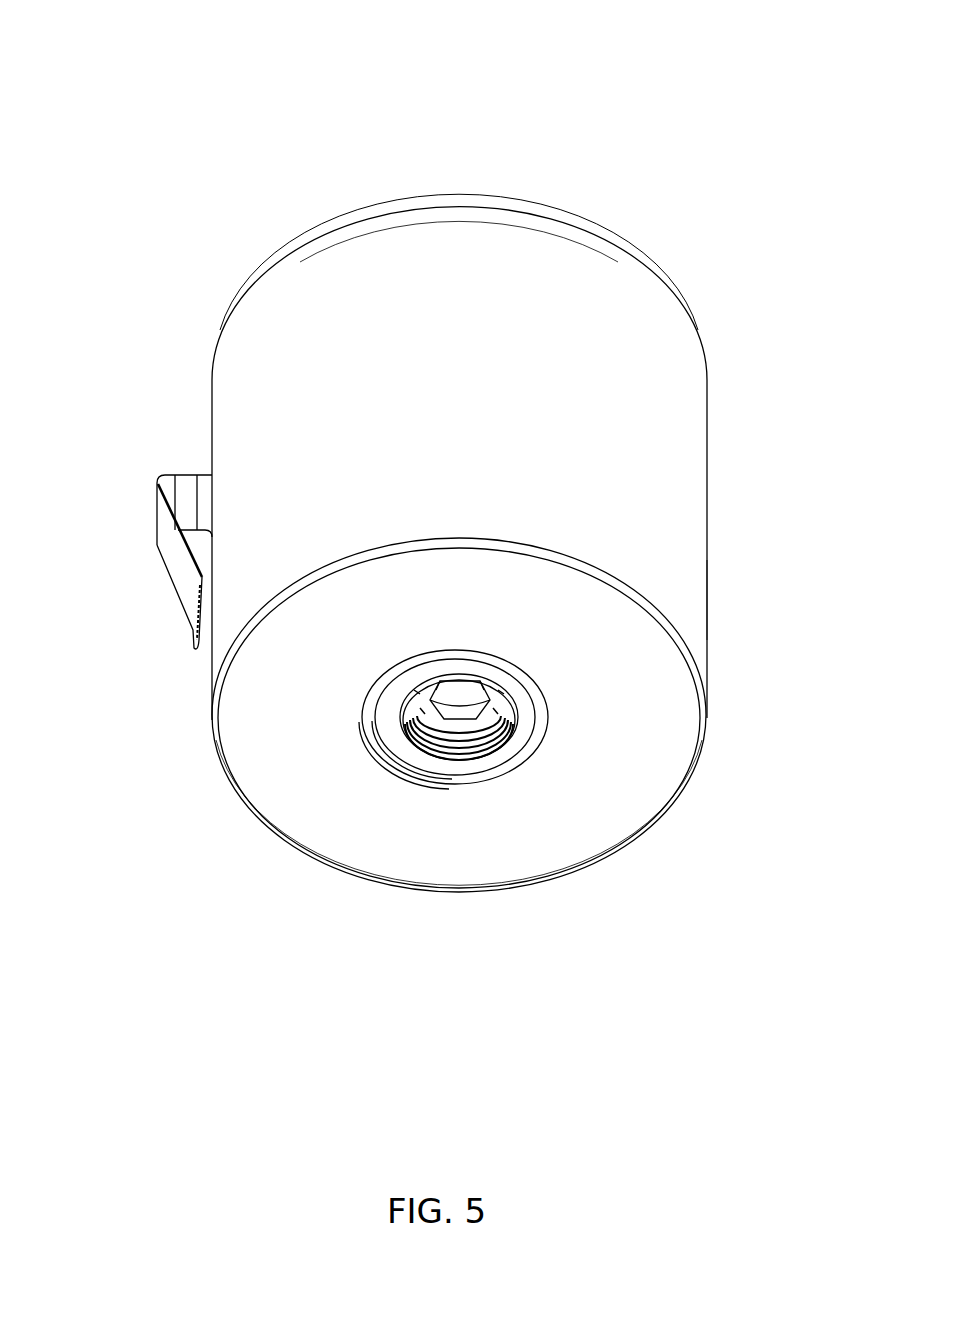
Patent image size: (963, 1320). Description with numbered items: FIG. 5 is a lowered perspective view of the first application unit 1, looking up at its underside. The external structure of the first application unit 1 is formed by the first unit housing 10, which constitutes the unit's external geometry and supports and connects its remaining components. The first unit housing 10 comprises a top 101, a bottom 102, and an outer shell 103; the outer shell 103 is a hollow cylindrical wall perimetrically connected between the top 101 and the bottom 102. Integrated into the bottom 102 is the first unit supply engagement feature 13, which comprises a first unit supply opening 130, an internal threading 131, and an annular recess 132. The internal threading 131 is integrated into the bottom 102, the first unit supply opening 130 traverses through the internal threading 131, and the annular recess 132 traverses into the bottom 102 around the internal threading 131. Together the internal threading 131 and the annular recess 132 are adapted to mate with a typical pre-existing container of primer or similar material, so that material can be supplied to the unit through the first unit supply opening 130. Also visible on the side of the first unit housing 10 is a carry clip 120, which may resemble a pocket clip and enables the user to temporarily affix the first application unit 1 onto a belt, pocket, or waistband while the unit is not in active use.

The first application unit 1 is at (185, 82).
The first unit housing 10 is at (722, 440).
The top 101 is at (545, 203).
The bottom 102 is at (582, 840).
The outer shell 103 is at (700, 593).
The carry clip 120 is at (165, 528).
The first unit supply engagement feature 13 is at (392, 624).
The first unit supply opening 130 is at (440, 767).
The internal threading 131 is at (495, 692).
The annular recess 132 is at (547, 710).